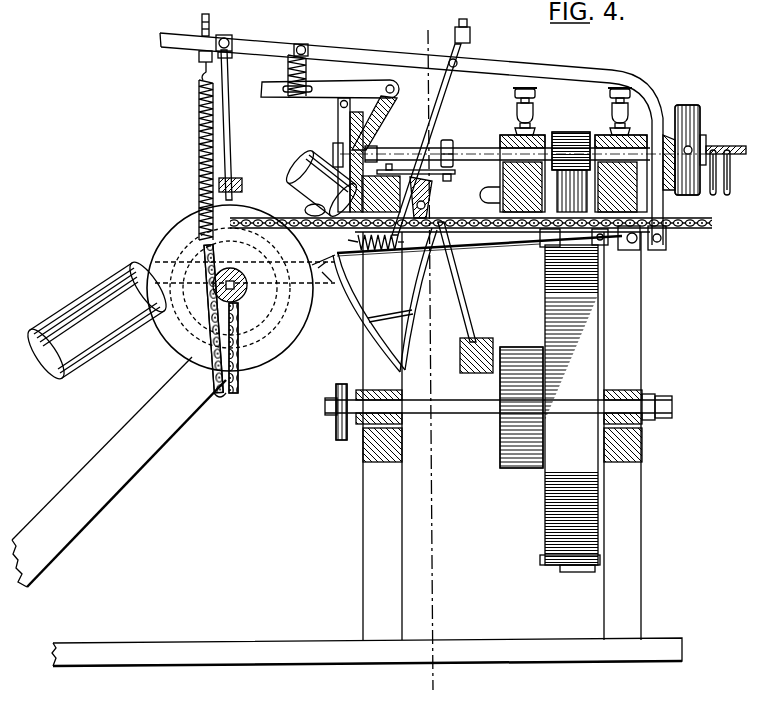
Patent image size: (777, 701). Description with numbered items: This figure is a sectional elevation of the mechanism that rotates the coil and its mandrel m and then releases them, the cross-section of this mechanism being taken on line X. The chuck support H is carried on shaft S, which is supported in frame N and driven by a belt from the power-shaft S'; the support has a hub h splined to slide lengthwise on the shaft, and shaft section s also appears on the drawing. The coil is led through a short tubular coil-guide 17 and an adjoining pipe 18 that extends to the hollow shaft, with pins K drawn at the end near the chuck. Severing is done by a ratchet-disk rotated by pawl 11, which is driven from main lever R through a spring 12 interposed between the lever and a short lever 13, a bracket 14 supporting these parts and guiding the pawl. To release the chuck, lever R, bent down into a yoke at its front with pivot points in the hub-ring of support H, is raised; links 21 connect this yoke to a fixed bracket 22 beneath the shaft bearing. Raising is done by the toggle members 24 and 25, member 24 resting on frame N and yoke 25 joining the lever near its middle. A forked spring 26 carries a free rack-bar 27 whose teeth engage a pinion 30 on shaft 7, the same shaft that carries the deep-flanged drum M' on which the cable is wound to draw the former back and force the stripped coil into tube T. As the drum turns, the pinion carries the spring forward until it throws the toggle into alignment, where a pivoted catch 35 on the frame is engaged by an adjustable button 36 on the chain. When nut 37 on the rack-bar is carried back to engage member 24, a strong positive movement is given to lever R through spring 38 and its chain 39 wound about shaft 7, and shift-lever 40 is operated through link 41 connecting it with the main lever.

The main lever R is at (373, 48).
The section line x x X is at (428, 354).
The spring 38 is at (198, 124).
The link 41 is at (231, 136).
The shift-lever 40 is at (236, 176).
The spring 12 is at (287, 72).
The short lever 13 is at (268, 98).
The bracket 14 is at (378, 120).
The pawl 11 is at (340, 134).
The tubular coil-guide 17 is at (378, 162).
The pipe 18 is at (455, 158).
The shaft s is at (567, 127).
The shaft S is at (615, 150).
The hub h is at (664, 132).
The chuck support H is at (698, 122).
The mandrel m is at (740, 151).
The pins K is at (716, 152).
The pivoted catch 35 is at (440, 198).
The toggle yoke 25 is at (470, 48).
The toggle member 24 is at (462, 318).
The deep-flanged drum M' is at (235, 288).
The shaft 7 is at (248, 290).
The pinion 30 is at (237, 300).
The chain 39 is at (225, 400).
The tube T is at (294, 172).
The adjustable nut or button 36 is at (304, 208).
The frame N is at (642, 324).
The power-shaft S' is at (498, 407).
The nut 37 is at (546, 248).
The fixed bracket 22 is at (604, 247).
The links 21 is at (648, 252).
The forked spring 26 is at (356, 322).
The rack-bar 27 is at (326, 286).